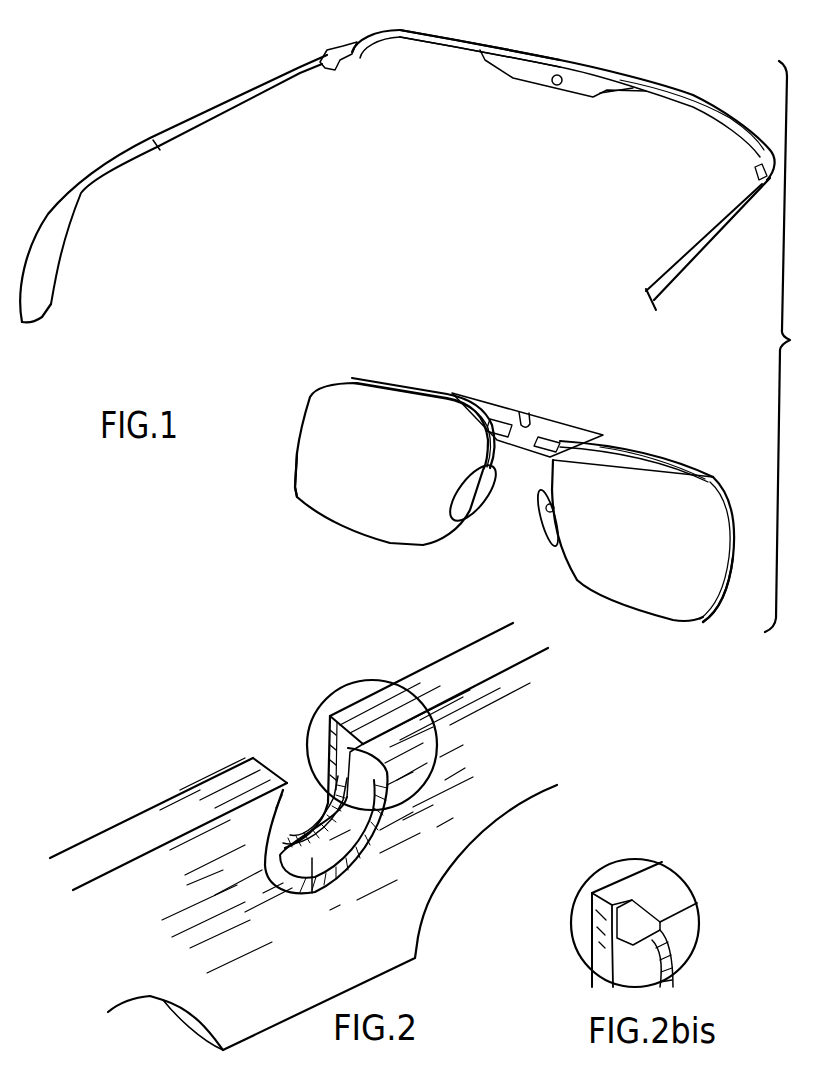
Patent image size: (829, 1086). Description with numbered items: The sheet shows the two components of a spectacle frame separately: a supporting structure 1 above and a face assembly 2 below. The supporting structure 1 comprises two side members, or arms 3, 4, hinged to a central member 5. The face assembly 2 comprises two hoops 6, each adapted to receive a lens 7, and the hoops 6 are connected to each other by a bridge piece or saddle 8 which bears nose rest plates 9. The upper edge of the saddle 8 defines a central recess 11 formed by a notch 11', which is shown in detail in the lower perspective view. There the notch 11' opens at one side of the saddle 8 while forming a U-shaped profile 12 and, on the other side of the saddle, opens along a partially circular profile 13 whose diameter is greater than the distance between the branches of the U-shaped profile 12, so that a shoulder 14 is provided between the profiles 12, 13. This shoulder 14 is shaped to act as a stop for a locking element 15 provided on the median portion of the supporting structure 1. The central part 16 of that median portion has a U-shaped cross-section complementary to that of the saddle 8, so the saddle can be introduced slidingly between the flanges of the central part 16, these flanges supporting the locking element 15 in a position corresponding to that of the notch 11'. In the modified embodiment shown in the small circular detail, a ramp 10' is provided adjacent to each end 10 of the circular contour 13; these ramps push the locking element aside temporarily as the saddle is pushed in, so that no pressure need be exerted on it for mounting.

In FIG. 1, the supporting structure 1 is at (596, 67).
In FIG. 1, the face assembly 2 is at (553, 412).
In FIG. 1, the arm 3 is at (157, 143).
In FIG. 1, the arm 4 is at (700, 243).
In FIG. 1, the central member 5 is at (467, 43).
In FIG. 1, the hoop 6 is at (295, 497).
In FIG. 1, the lens 7 is at (373, 508).
In FIG. 1, the saddle 8 is at (502, 418).
In FIG. 2, the saddle 8 is at (138, 818).
In FIG. 1, the nose rest plate 9 is at (472, 507).
In FIG. 2, the end of circular contour 10 is at (383, 700).
In FIG. 2bis, the ramp 10' is at (651, 914).
In FIG. 1, the central recess 11 is at (541, 402).
In FIG. 2, the central recess 11 is at (311, 763).
In FIG. 2, the notch 11' is at (222, 783).
In FIG. 2, the U-shaped profile 12 is at (290, 850).
In FIG. 2, the partially circular profile 13 is at (362, 848).
In FIG. 2, the shoulder 14 is at (312, 893).
In FIG. 1, the locking element 15 is at (557, 86).
In FIG. 1, the central part 16 is at (528, 72).